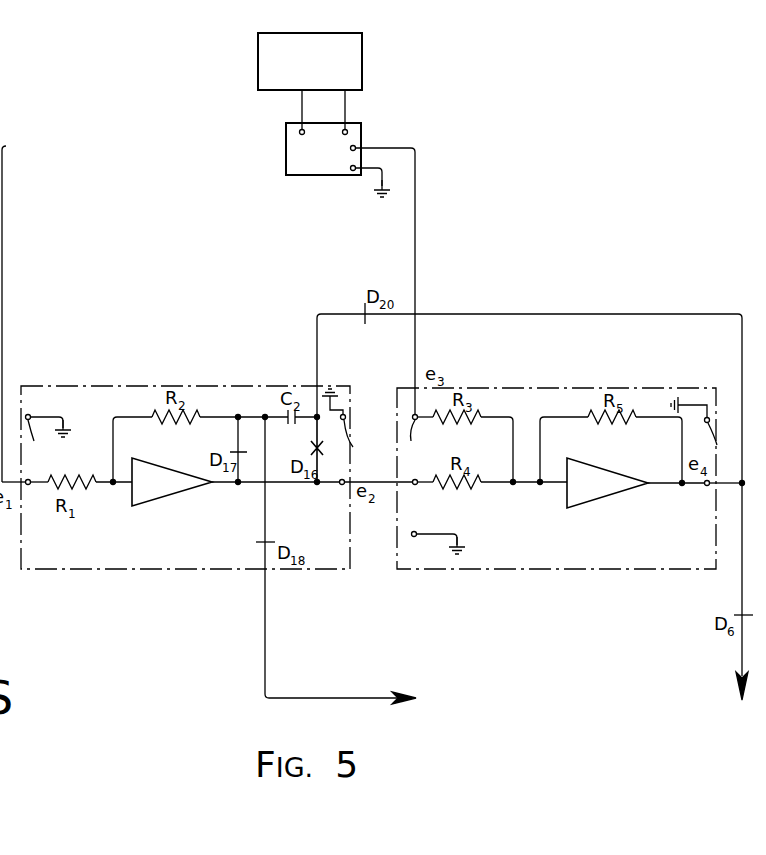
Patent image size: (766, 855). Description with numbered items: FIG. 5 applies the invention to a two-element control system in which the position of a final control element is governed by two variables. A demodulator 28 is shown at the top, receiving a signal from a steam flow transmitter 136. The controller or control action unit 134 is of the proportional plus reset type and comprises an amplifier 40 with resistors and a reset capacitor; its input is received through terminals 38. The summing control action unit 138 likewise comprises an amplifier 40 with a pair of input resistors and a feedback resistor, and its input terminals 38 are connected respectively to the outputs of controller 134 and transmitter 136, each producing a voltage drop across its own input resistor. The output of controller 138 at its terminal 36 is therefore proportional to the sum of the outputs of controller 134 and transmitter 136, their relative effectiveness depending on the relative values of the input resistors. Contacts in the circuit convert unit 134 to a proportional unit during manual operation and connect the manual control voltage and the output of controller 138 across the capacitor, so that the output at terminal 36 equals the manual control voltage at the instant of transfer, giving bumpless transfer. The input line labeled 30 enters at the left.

The input signal line 30 is at (0, 73).
The steam flow transmitter 136 is at (363, 68).
The demodulator 28 is at (286, 143).
The input terminals 38 is at (28, 479).
The amplifier 40 is at (167, 498).
The output terminal 36 is at (343, 479).
The control action unit 134 is at (128, 570).
The summing control action unit 138 is at (518, 570).